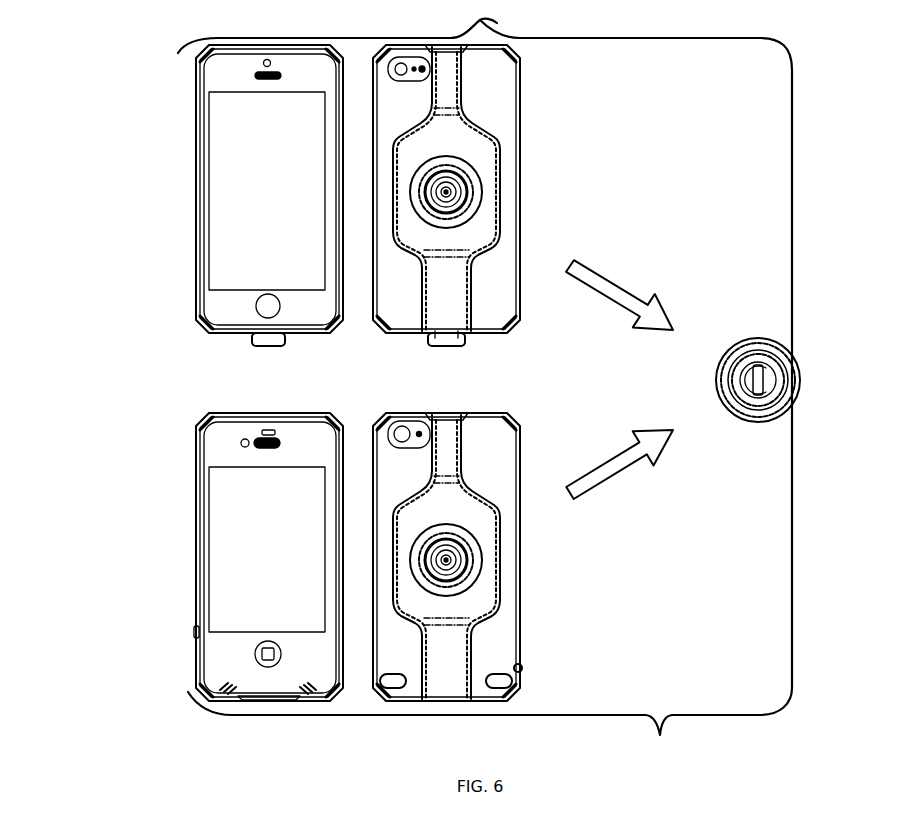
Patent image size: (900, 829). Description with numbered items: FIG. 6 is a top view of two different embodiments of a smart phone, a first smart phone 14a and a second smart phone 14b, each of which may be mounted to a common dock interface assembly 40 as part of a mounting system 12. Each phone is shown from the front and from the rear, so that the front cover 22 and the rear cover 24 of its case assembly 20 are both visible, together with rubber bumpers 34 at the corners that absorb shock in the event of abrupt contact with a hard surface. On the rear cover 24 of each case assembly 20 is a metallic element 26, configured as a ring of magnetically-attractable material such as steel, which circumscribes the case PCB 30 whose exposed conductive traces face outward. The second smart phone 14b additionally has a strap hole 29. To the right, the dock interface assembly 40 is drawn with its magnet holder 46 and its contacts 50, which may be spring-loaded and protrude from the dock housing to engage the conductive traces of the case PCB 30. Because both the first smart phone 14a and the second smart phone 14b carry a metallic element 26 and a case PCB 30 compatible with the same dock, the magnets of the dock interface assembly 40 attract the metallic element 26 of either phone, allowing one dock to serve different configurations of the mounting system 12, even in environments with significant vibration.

The mounting system 12 is at (485, 390).
The first smart phone 14a is at (243, 202).
The second smart phone 14b is at (245, 520).
The case assembly 20 is at (518, 74).
The front cover 22 is at (207, 70).
The rear cover 24 is at (487, 78).
The metallic element 26 is at (470, 211).
The strap hole 29 is at (282, 341).
The case printed circuit board 30 is at (446, 192).
The rubber bumper 34 is at (333, 413).
The dock interface assembly 40 is at (758, 339).
The magnet holder 46 is at (792, 376).
The contact 50 is at (760, 386).